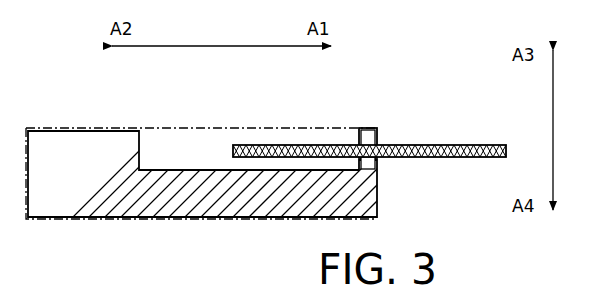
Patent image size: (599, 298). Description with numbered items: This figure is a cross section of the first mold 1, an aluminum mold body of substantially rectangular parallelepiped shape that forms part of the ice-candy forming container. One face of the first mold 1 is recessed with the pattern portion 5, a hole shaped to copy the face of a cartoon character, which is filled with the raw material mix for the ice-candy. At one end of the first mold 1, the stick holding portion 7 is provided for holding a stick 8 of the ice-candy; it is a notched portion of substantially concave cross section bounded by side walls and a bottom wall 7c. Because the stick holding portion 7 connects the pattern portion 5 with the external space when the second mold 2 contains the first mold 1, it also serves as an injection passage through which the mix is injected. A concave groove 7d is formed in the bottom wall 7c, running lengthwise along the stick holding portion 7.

The first mold 1 is at (108, 128).
The second mold 2 is at (210, 128).
The pattern portion 5 is at (162, 131).
The stick holding portion 7 is at (332, 128).
The bottom wall 7c is at (368, 128).
The concave groove 7d is at (376, 162).
The stick 8 is at (466, 145).